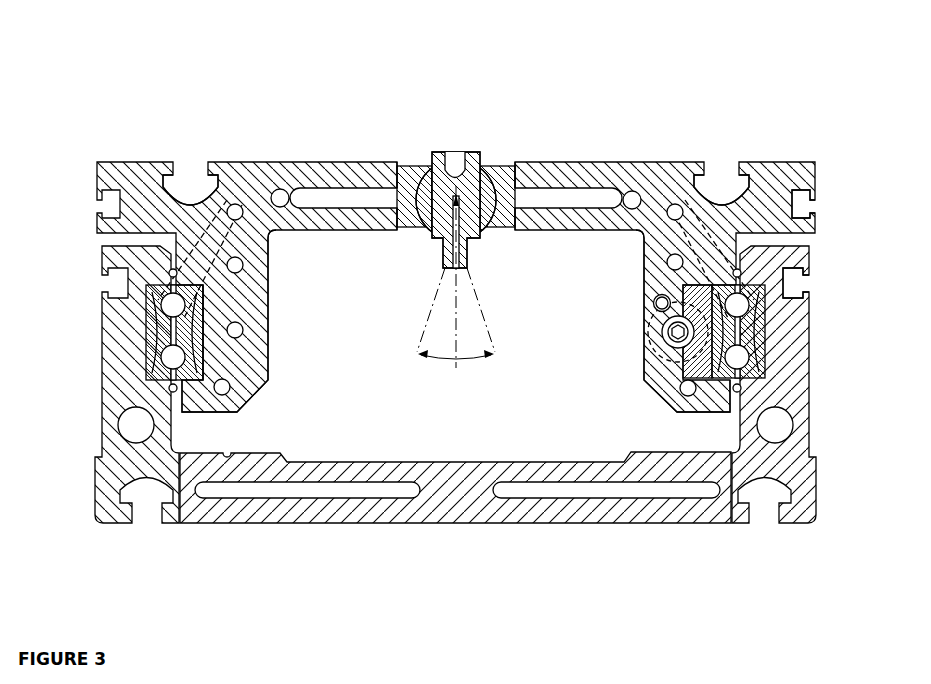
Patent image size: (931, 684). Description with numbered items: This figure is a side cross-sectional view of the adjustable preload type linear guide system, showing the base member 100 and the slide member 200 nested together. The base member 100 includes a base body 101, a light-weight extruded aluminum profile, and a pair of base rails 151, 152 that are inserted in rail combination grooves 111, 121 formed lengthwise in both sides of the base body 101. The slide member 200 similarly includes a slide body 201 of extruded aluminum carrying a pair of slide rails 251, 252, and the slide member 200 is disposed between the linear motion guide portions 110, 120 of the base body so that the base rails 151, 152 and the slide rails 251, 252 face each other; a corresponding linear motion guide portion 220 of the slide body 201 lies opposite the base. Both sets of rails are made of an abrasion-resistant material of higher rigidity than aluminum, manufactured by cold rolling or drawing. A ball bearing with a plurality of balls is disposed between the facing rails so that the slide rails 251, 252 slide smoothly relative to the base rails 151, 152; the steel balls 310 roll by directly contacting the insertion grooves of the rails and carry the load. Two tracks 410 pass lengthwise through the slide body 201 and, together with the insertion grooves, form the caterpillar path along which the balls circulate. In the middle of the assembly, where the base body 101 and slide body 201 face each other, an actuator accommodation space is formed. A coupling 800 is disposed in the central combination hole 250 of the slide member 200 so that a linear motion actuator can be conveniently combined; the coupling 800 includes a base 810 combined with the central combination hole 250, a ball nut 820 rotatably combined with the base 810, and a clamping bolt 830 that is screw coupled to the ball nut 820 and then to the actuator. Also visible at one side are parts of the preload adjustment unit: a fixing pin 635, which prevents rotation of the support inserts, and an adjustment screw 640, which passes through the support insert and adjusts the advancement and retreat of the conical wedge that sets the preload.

The base member 100 is at (455, 538).
The base body 101 is at (350, 507).
The linear motion guide portion 110 is at (790, 400).
The rail combination groove 111 is at (750, 355).
The linear motion guide portion 120 is at (118, 386).
The rail combination groove 121 is at (157, 327).
The base rail 151 is at (765, 298).
The base rail 152 is at (147, 290).
The slide member 200 is at (232, 157).
The slide body 201 is at (597, 160).
The linear motion guide portion 220 is at (253, 313).
The central combination hole 250 is at (499, 162).
The slide rail 251 is at (655, 392).
The slide rail 252 is at (205, 367).
The steel ball 310 is at (790, 385).
The track 410 is at (230, 262).
The fixing pin 635 is at (654, 304).
The adjustment screw 640 is at (662, 334).
The coupling 800 is at (430, 191).
The base 810 is at (405, 163).
The ball nut 820 is at (414, 160).
The clamping bolt 830 is at (438, 152).